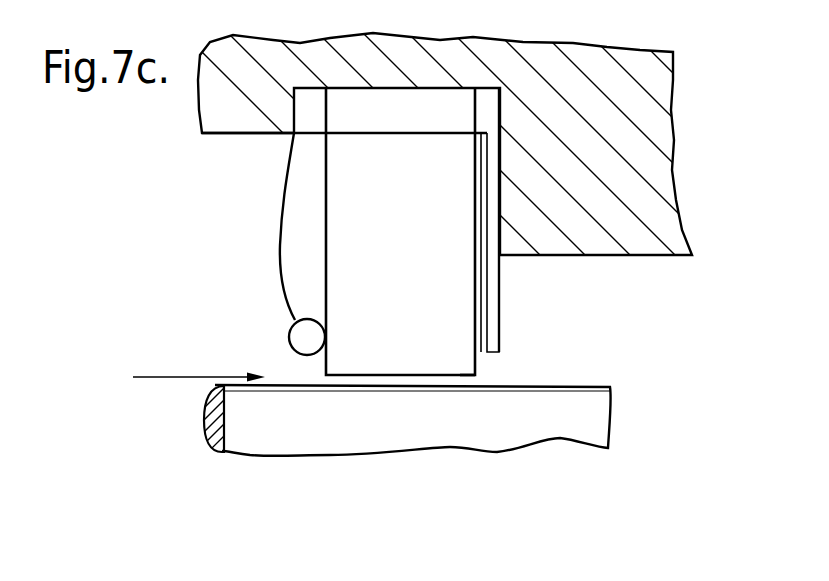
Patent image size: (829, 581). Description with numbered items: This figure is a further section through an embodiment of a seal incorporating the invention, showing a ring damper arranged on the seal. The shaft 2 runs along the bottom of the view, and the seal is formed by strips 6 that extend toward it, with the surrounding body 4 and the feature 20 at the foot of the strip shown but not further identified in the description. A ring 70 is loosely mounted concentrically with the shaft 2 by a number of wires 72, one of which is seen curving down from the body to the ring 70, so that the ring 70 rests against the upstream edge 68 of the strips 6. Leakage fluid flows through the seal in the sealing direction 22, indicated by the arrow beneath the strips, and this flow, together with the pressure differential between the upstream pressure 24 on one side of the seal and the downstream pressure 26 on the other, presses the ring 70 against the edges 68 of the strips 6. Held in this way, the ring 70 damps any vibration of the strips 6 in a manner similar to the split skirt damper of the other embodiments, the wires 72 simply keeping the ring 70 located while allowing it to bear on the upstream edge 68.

The shaft 2 is at (558, 410).
The housing body 4 is at (398, 50).
The strips 6 is at (457, 288).
The gap 20 is at (465, 368).
The sealing direction 22 is at (175, 373).
The upstream pressure 24 is at (147, 201).
The downstream pressure 26 is at (709, 318).
The upstream edge 68 is at (328, 233).
The ring 70 is at (300, 334).
The wires 72 is at (282, 222).